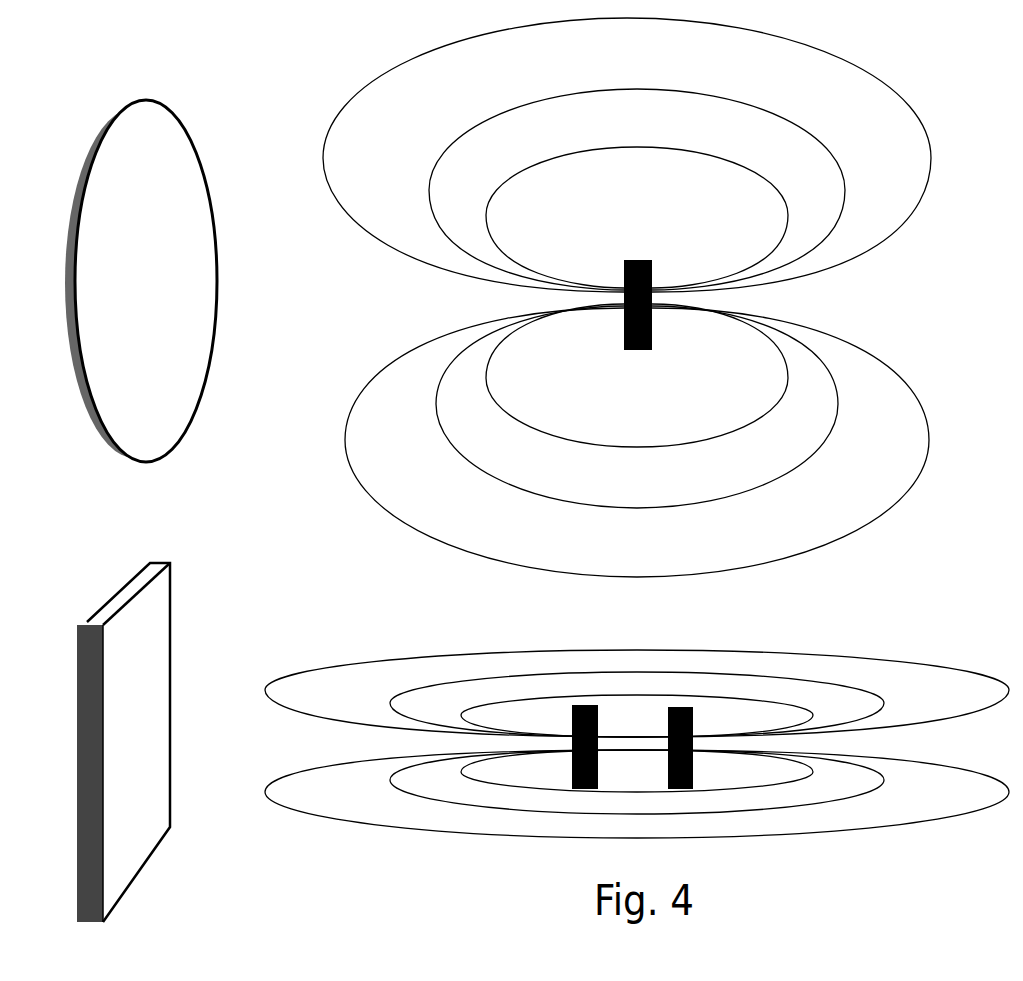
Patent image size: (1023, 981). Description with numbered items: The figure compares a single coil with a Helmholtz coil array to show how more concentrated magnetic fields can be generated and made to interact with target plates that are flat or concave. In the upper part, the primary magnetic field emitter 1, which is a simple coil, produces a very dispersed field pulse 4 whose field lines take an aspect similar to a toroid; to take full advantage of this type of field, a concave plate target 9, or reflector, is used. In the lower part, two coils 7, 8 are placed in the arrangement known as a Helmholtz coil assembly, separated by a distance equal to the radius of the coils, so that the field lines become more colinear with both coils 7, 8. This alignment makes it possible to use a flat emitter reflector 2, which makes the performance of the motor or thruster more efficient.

The primary magnetic field emitter 1 is at (638, 331).
The flat emitter reflector 2 is at (123, 742).
The field pulse 4 is at (637, 428).
The coil of Helmholtz coil assembly 7 is at (562, 717).
The coil of Helmholtz coil assembly 8 is at (700, 721).
The concave plate target 9 is at (141, 281).